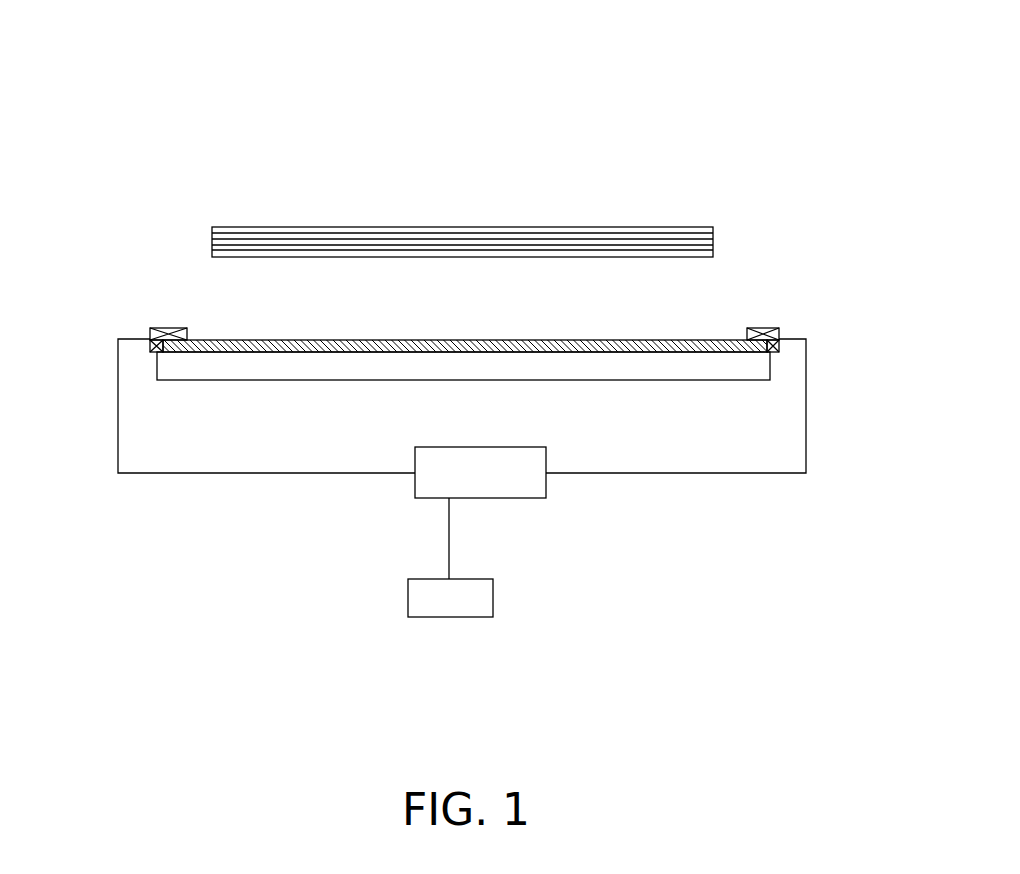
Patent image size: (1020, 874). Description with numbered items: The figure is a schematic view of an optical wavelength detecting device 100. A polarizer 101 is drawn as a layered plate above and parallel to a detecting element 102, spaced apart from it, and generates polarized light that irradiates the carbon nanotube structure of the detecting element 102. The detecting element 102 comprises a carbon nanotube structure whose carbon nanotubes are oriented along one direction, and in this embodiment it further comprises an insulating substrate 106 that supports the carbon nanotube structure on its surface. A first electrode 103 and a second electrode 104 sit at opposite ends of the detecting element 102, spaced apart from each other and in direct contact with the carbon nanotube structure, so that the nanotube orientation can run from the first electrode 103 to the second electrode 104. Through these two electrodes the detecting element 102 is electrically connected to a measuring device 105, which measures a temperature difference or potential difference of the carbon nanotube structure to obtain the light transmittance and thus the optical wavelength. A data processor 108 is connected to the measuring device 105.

The optical wavelength detecting device 100 is at (422, 66).
The polarizer 101 is at (690, 230).
The detecting element 102 is at (670, 338).
The first electrode 103 is at (172, 330).
The second electrode 104 is at (757, 328).
The measuring device 105 is at (518, 468).
The insulating substrate 106 is at (772, 368).
The data processor 108 is at (482, 608).